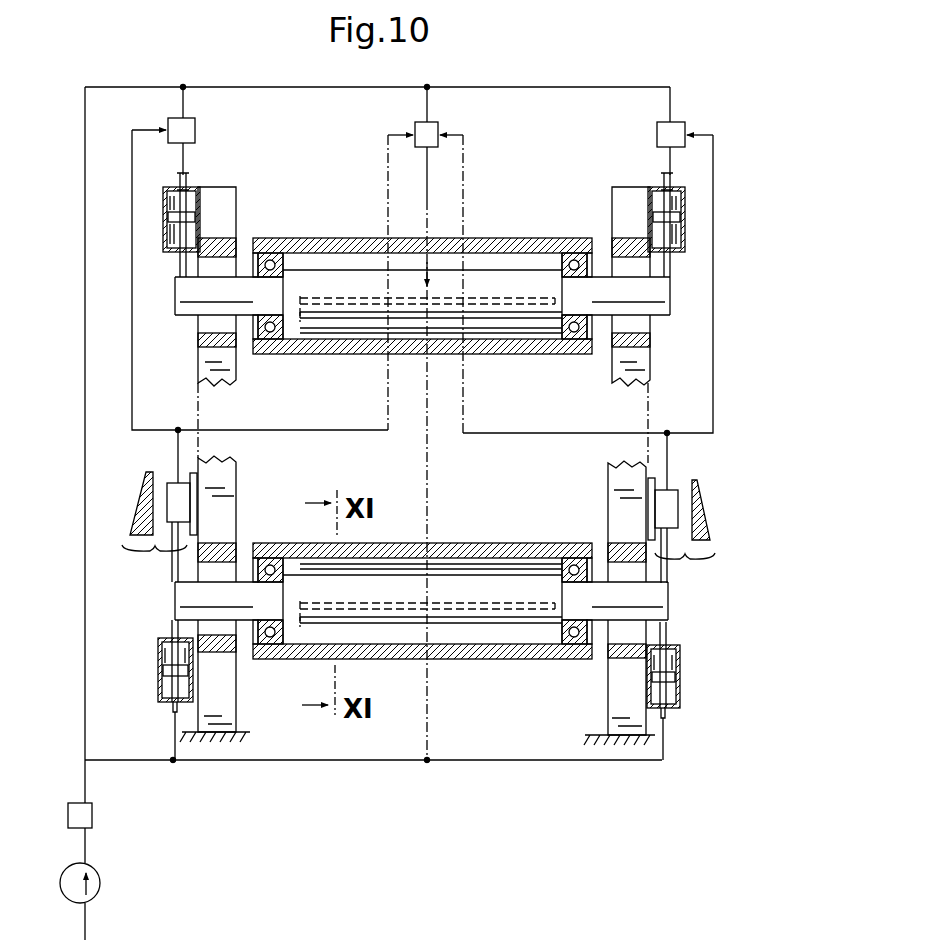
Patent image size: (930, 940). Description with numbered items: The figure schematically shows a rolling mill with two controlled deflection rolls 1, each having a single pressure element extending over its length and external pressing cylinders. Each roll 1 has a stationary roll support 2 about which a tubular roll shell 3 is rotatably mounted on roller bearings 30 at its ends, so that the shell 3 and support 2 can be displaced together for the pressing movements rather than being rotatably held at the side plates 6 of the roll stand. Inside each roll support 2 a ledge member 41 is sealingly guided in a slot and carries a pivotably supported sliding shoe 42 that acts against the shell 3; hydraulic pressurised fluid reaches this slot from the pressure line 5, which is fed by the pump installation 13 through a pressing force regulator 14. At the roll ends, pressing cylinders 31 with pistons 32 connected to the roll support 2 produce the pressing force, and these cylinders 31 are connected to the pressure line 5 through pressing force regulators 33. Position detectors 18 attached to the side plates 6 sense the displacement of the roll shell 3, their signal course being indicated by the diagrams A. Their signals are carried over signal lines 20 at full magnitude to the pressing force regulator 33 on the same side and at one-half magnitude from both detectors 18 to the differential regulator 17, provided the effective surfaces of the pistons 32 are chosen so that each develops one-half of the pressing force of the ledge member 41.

The controlled deflection roll 1 is at (498, 236).
The roll support 2 is at (505, 282).
The roll shell 3 is at (536, 247).
The hydraulic pressure line 5 is at (560, 88).
The side plate 6 is at (222, 196).
The pump installation 13 is at (100, 884).
The pressing force regulator 14 is at (92, 816).
The differential regulator 17 is at (433, 128).
The position detector 18 is at (168, 481).
The signal line 20 is at (287, 430).
The roller bearing 30 is at (271, 263).
The pressing cylinder 31 is at (192, 202).
The piston 32 is at (174, 218).
The pressing force regulator 33 is at (195, 131).
The ledge member 41 is at (498, 318).
The sliding shoe 42 is at (476, 330).
The diagram of signal course A is at (141, 500).